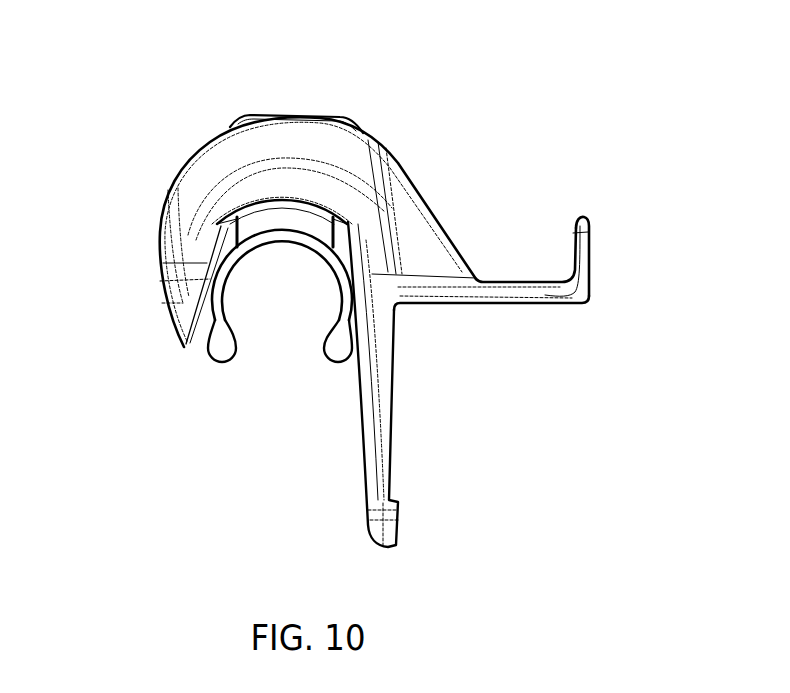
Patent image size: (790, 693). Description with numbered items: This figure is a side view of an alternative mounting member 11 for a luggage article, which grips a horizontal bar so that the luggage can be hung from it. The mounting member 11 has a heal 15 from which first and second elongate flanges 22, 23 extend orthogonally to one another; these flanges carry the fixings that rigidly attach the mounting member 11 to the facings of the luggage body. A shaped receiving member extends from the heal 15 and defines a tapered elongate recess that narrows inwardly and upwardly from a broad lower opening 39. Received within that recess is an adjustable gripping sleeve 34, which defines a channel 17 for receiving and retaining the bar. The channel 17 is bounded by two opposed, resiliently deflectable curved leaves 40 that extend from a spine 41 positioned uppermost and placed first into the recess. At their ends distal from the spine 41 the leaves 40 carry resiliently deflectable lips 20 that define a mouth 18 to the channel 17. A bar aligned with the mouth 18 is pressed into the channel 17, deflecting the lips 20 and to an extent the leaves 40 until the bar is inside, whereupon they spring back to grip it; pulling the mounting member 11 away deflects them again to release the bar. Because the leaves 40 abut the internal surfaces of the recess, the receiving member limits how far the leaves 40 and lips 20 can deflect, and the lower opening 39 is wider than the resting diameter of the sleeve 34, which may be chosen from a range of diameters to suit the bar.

The mounting member 11 is at (425, 102).
The heal 15 is at (405, 293).
The channel 17 is at (265, 300).
The mouth 18 is at (282, 350).
The lips 20 is at (218, 352).
The first elongate flange 22 is at (538, 288).
The second elongate flange 23 is at (383, 460).
The adjustable gripping sleeve 34 is at (257, 240).
The lower opening 39 is at (203, 340).
The curved leaves 40 is at (212, 302).
The spine 41 is at (290, 235).